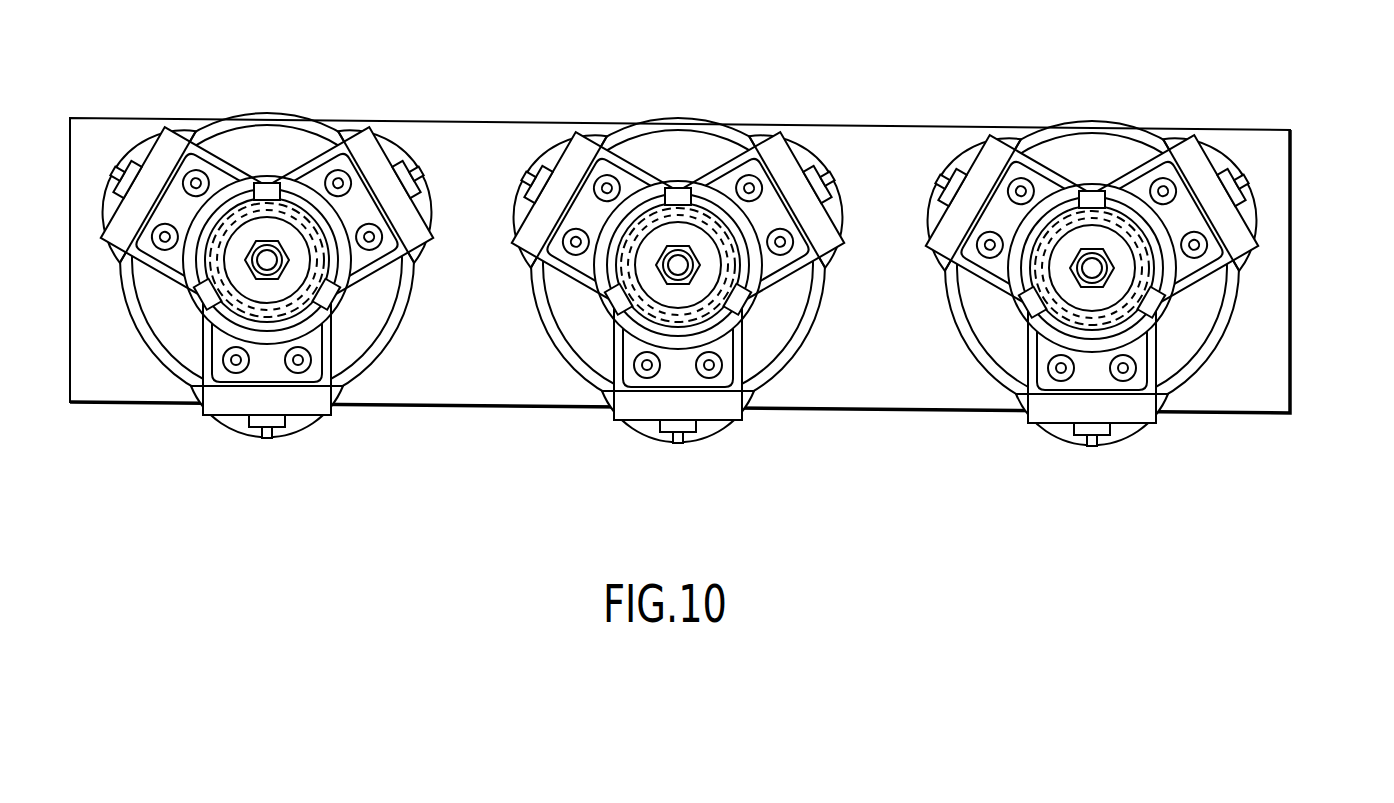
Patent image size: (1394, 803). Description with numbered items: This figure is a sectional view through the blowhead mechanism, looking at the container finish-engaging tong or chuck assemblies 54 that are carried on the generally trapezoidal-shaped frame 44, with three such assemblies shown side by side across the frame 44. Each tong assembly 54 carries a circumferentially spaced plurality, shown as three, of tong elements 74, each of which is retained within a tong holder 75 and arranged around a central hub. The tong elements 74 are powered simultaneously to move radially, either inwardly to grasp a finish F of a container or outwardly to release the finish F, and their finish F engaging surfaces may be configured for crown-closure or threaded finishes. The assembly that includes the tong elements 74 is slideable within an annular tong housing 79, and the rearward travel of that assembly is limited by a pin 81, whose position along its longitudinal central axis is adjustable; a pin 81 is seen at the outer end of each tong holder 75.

The frame 44 is at (1292, 253).
The tong or chuck assembly 54 is at (350, 120).
The tong element 74 is at (220, 155).
The tong holder 75 is at (180, 120).
The annular tong housing 79 is at (407, 313).
The pin 81 is at (117, 163).
The finish F is at (333, 297).